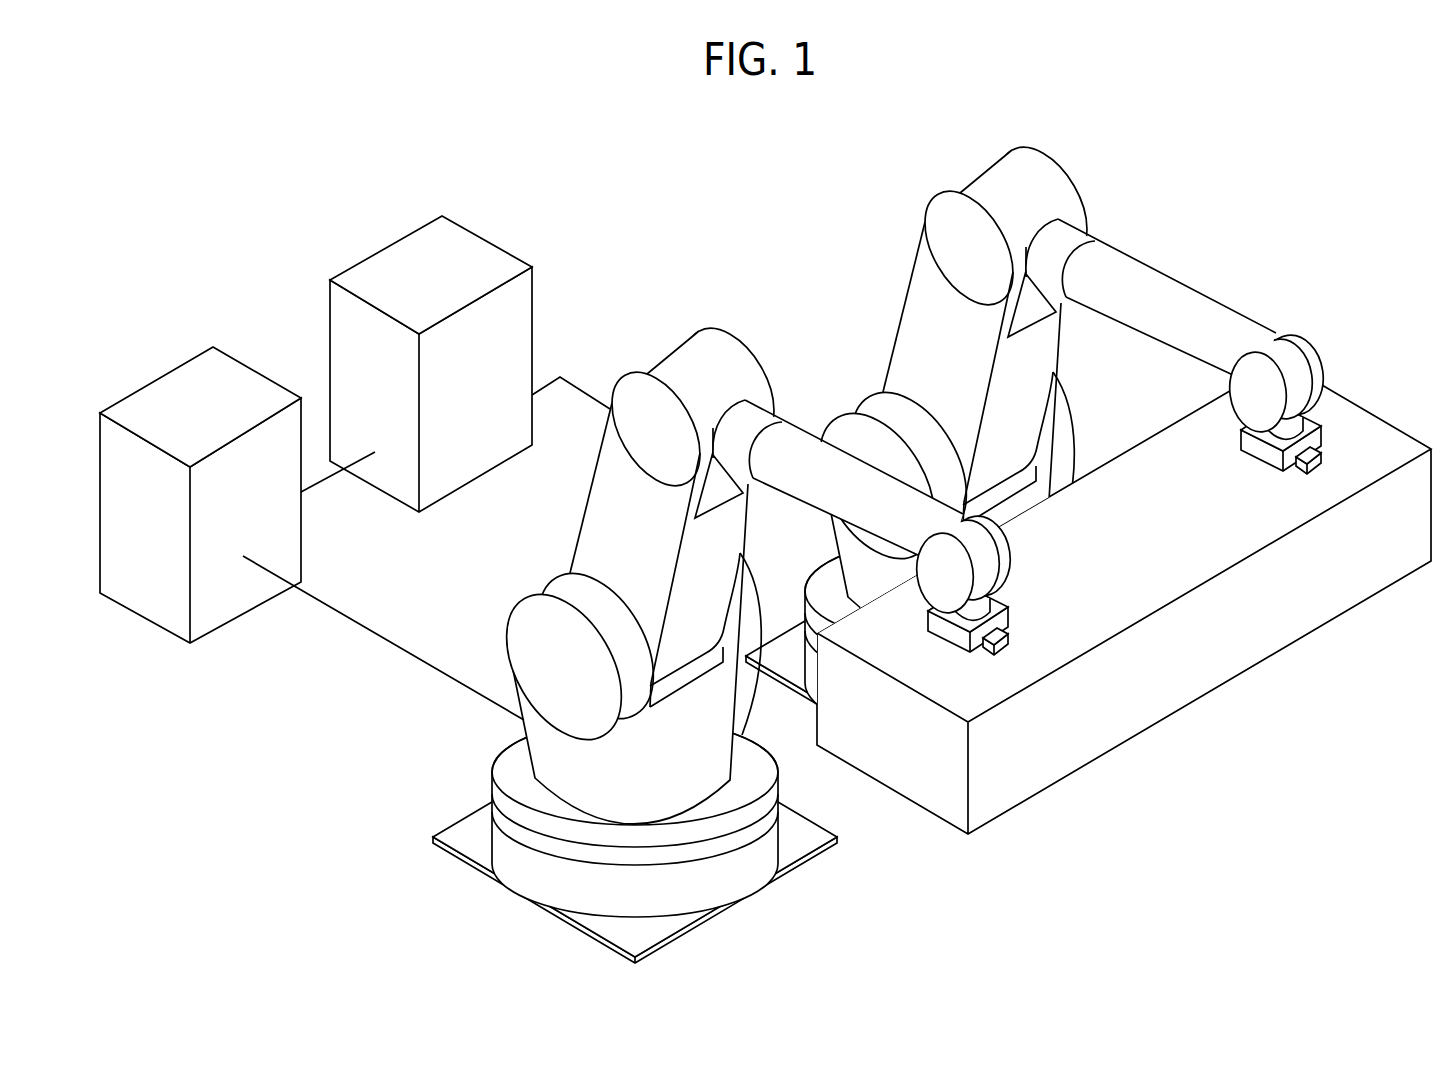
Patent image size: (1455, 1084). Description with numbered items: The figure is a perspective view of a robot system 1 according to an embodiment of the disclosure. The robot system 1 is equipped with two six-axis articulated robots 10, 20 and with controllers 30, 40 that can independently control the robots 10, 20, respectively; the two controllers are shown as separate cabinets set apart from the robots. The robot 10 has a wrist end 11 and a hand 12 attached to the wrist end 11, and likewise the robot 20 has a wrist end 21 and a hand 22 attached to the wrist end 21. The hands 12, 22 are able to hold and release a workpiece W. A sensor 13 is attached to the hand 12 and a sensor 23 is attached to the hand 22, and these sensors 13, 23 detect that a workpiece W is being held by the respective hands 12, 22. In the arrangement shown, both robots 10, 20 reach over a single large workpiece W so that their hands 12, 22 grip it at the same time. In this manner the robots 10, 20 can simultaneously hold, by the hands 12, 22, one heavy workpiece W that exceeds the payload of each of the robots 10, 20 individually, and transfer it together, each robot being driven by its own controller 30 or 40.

The robot system 1 is at (647, 133).
The robot 10 is at (665, 338).
The wrist end 11 is at (987, 603).
The hand 12 is at (950, 637).
The sensor 13 is at (1000, 647).
The robot 20 is at (978, 162).
The wrist end 21 is at (1312, 422).
The hand 22 is at (1262, 455).
The sensor 23 is at (1317, 463).
The controller 30 is at (158, 378).
The controller 40 is at (385, 247).
The workpiece W is at (1229, 657).